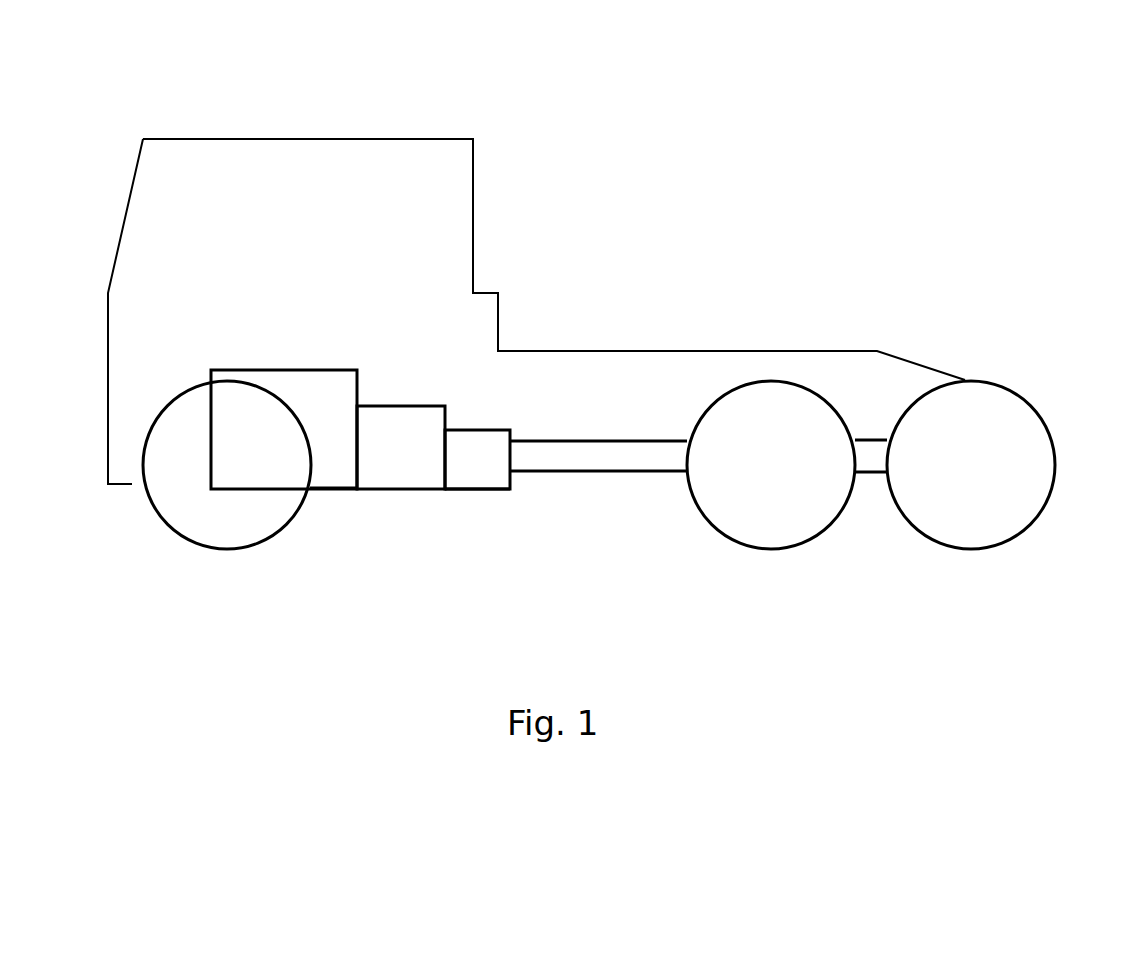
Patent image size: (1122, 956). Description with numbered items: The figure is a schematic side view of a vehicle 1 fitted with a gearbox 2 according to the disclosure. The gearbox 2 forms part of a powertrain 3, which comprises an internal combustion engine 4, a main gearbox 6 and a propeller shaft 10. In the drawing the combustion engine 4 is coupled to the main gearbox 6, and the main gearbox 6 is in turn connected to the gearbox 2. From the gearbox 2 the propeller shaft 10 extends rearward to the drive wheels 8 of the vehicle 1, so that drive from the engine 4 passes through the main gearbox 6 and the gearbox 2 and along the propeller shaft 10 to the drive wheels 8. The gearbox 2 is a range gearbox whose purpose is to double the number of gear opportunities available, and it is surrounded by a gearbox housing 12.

The vehicle 1 is at (581, 122).
The gearbox 2 is at (478, 430).
The powertrain 3 is at (403, 549).
The internal combustion engine 4 is at (256, 370).
The main gearbox 6 is at (400, 406).
The drive wheels 8 is at (818, 538).
The propeller shaft 10 is at (598, 471).
The gearbox housing 12 is at (482, 489).